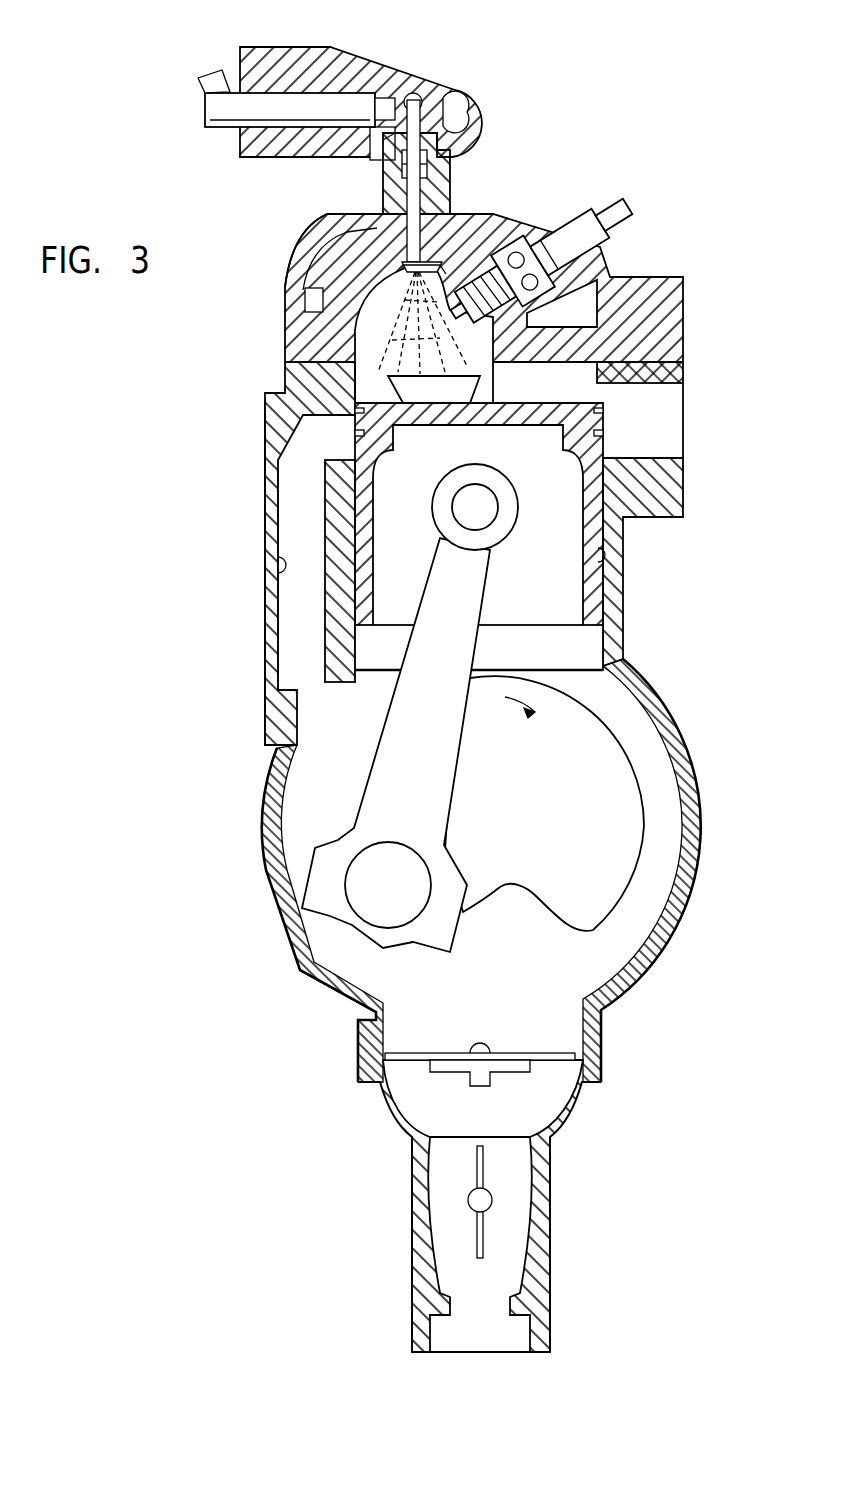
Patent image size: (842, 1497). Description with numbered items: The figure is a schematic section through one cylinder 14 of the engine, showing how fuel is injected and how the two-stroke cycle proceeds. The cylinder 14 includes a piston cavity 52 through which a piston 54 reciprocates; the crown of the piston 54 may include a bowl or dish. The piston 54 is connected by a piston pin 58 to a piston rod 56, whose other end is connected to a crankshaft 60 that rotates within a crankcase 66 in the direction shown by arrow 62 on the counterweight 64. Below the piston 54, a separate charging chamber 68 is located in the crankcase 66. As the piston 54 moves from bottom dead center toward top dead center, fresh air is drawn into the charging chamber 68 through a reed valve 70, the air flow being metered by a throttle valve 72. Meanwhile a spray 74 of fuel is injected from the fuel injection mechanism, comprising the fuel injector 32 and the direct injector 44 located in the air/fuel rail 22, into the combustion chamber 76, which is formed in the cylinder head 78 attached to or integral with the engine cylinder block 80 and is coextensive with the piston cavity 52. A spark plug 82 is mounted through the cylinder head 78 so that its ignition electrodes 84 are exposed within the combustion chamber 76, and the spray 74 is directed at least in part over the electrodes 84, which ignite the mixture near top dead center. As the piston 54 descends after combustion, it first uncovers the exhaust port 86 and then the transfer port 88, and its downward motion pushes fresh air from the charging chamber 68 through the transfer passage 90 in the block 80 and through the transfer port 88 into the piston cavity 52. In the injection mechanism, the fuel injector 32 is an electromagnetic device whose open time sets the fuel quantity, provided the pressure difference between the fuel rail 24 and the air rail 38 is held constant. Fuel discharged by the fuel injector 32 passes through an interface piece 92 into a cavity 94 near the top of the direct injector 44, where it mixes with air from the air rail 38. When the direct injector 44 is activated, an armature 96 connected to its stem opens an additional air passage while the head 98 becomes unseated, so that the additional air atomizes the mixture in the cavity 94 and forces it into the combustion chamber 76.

The cylinder 14 is at (655, 184).
The air/fuel rail 22 is at (285, 47).
The fuel rail 24 is at (355, 62).
The fuel injector 32 is at (215, 108).
The air rail 38 is at (452, 110).
The direct injector 44 is at (452, 180).
The piston cavity 52 is at (600, 557).
The piston 54 is at (605, 422).
The piston rod 56 is at (445, 765).
The piston pin 58 is at (452, 509).
The crankshaft 60 is at (375, 915).
The arrow 62 is at (522, 703).
The counterweight 64 is at (615, 755).
The crankcase 66 is at (645, 960).
The charging chamber 68 is at (529, 975).
The reed valve 70 is at (520, 1065).
The throttle valve 72 is at (495, 1200).
The spray of fuel 74 is at (413, 323).
The combustion chamber 76 is at (367, 300).
The cylinder head 78 is at (327, 216).
The engine cylinder block 80 is at (265, 482).
The spark plug 82 is at (546, 230).
The spark plug ignition electrodes 84 is at (386, 283).
The exhaust port 86 is at (685, 385).
The transfer port 88 is at (265, 405).
The transfer passage 90 is at (283, 562).
The interface piece 92 is at (432, 110).
The cavity 94 is at (393, 123).
The armature 96 is at (427, 160).
The head of the direct injector 98 is at (404, 270).